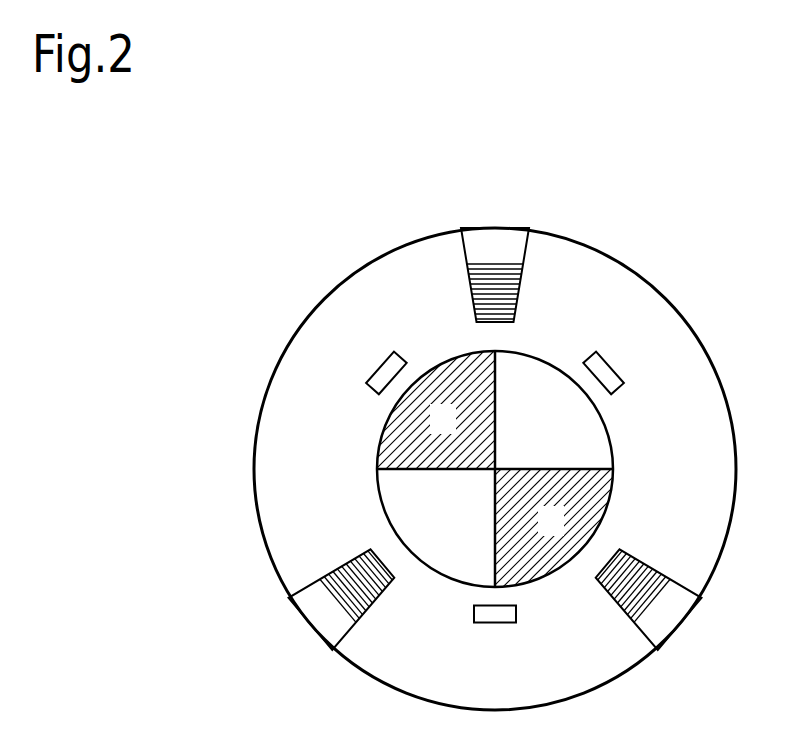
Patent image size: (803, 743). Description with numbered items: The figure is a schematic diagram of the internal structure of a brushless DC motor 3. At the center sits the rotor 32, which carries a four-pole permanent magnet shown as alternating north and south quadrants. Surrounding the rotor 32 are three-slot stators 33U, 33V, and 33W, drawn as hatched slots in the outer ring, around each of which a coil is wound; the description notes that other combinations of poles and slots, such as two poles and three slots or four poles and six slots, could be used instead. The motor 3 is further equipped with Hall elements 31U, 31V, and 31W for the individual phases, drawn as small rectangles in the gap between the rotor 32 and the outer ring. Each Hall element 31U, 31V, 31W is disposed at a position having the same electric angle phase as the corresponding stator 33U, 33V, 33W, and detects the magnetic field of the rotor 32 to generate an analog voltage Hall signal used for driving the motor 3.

The motor 3 is at (703, 213).
The rotor 32 is at (537, 351).
The stator (U-phase) 33U is at (508, 229).
The stator (V-phase) 33V is at (317, 637).
The stator (W-phase) 33W is at (692, 610).
The Hall element (U-phase) 31U is at (383, 358).
The Hall element (V-phase) 31V is at (610, 365).
The Hall element (W-phase) 31W is at (494, 622).